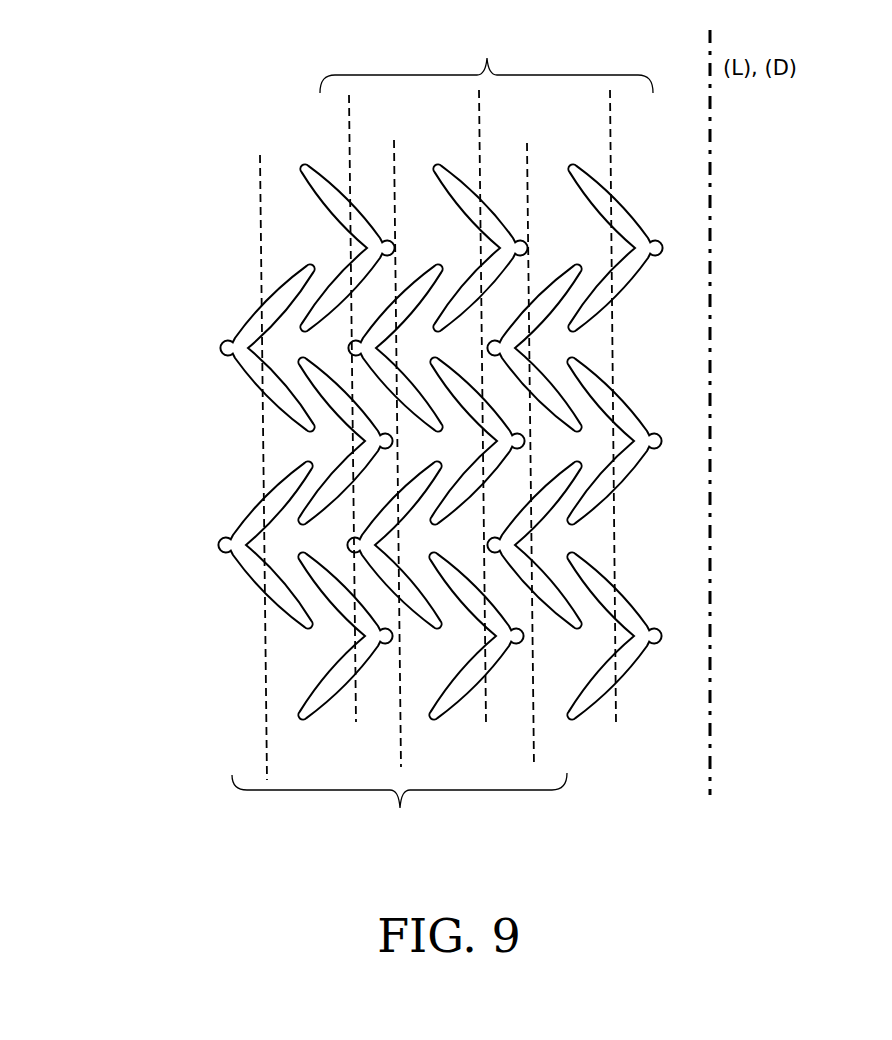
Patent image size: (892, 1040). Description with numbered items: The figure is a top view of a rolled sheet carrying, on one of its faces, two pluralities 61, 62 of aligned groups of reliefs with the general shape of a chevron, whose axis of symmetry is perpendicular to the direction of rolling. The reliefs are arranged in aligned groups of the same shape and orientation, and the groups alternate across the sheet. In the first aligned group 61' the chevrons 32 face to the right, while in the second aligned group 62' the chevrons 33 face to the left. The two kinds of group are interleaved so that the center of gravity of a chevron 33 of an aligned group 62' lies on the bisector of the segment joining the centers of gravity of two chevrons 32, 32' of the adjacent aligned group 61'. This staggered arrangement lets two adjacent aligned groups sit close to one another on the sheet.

The chevron 32 is at (296, 216).
The chevron 32' is at (290, 440).
The chevron 33 is at (248, 330).
The first plurality of aligned groups 61 is at (486, 59).
The first aligned group 61' is at (287, 374).
The second plurality of aligned groups 62 is at (399, 808).
The second aligned group 62' is at (175, 496).